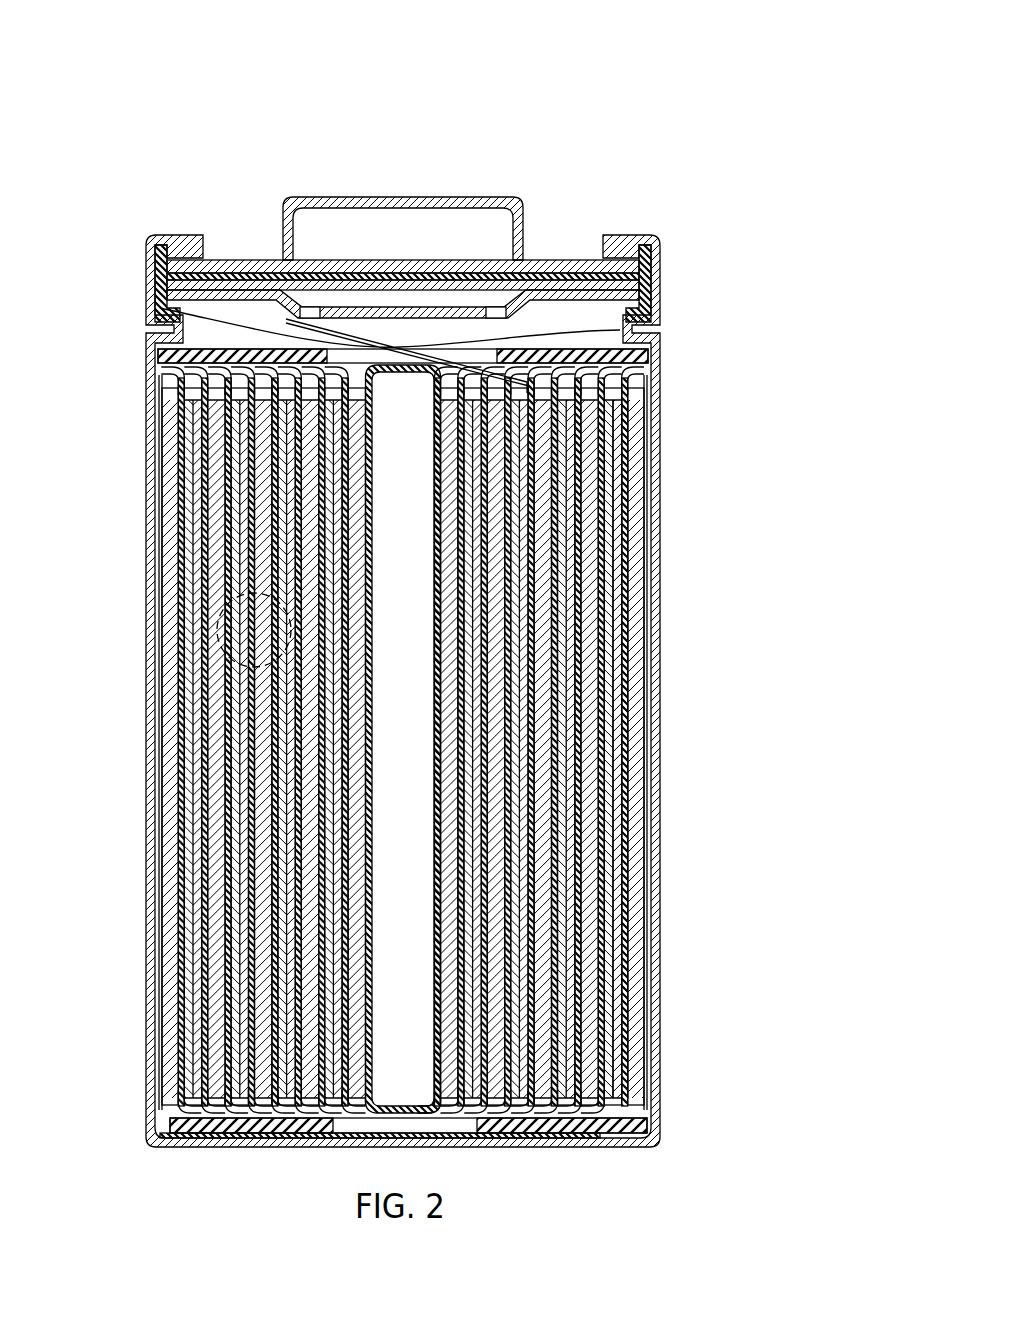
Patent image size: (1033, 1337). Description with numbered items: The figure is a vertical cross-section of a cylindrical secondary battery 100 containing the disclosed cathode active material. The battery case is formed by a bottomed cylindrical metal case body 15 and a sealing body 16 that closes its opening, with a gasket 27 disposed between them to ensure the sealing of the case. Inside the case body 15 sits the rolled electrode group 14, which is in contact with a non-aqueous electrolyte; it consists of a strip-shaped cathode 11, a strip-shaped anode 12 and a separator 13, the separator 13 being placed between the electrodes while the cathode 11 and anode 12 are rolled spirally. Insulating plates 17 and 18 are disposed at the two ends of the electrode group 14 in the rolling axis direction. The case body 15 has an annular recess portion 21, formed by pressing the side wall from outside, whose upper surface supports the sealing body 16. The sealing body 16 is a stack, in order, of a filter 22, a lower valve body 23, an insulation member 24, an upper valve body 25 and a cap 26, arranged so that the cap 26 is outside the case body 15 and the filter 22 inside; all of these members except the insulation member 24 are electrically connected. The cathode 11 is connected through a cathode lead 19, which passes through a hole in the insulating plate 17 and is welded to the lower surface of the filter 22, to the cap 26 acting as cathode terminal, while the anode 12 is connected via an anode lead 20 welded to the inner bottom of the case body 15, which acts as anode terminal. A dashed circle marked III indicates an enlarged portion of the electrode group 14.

The secondary battery 100 is at (645, 89).
The cathode 11 is at (613, 812).
The anode 12 is at (626, 858).
The separator 13 is at (772, 800).
The electrode group 14 is at (492, 739).
The case body 15 is at (668, 236).
The sealing body 16 is at (467, 223).
The insulating plate 17 is at (643, 360).
The insulating plate 18 is at (648, 1125).
The cathode lead 19 is at (160, 308).
The anode lead 20 is at (170, 1125).
The recess portion 21 is at (160, 356).
The filter 22 is at (407, 308).
The lower valve body 23 is at (305, 286).
The insulation member 24 is at (230, 280).
The upper valve body 25 is at (337, 298).
The cap 26 is at (480, 198).
The gasket 27 is at (655, 262).
The enlarged portion III is at (217, 650).